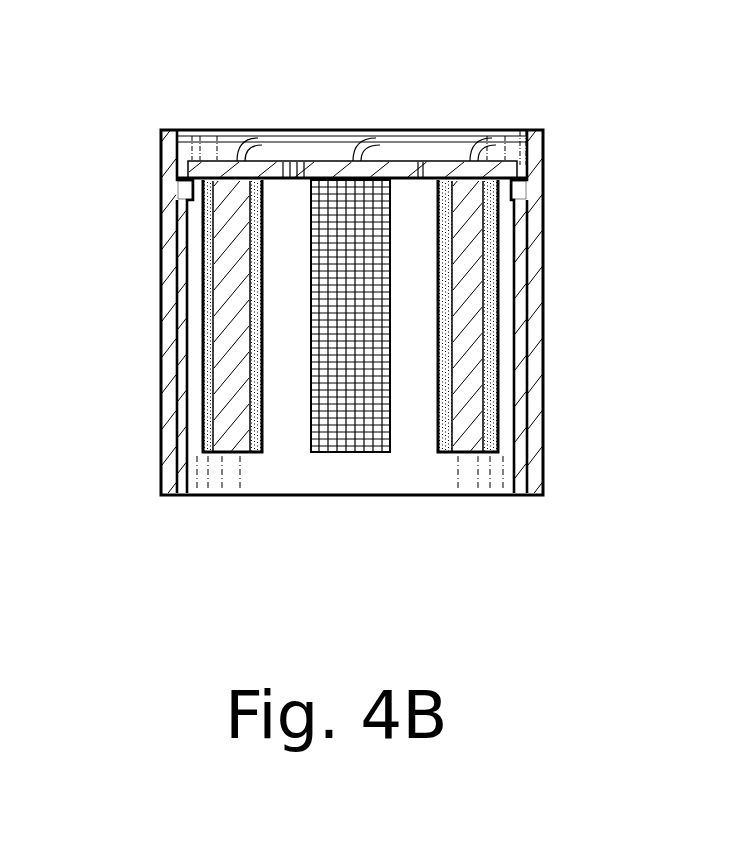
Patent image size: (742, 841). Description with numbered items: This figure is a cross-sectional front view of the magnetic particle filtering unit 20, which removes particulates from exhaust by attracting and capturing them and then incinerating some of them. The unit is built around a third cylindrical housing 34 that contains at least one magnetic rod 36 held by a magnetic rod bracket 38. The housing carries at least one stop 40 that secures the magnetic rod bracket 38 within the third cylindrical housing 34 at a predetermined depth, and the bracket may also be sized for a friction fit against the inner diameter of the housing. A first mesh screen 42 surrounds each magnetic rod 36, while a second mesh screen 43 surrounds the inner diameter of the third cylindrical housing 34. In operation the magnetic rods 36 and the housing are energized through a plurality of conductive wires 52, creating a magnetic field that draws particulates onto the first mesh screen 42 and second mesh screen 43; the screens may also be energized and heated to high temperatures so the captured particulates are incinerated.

The magnetic particle filtering unit 20 is at (404, 286).
The third cylindrical housing 34 is at (543, 343).
The magnetic rod 36 is at (228, 307).
The magnetic rod bracket 38 is at (393, 163).
The stop 40 is at (188, 192).
The first mesh screen 42 is at (250, 451).
The second mesh screen 43 is at (178, 372).
The conductive wires 52 is at (303, 140).